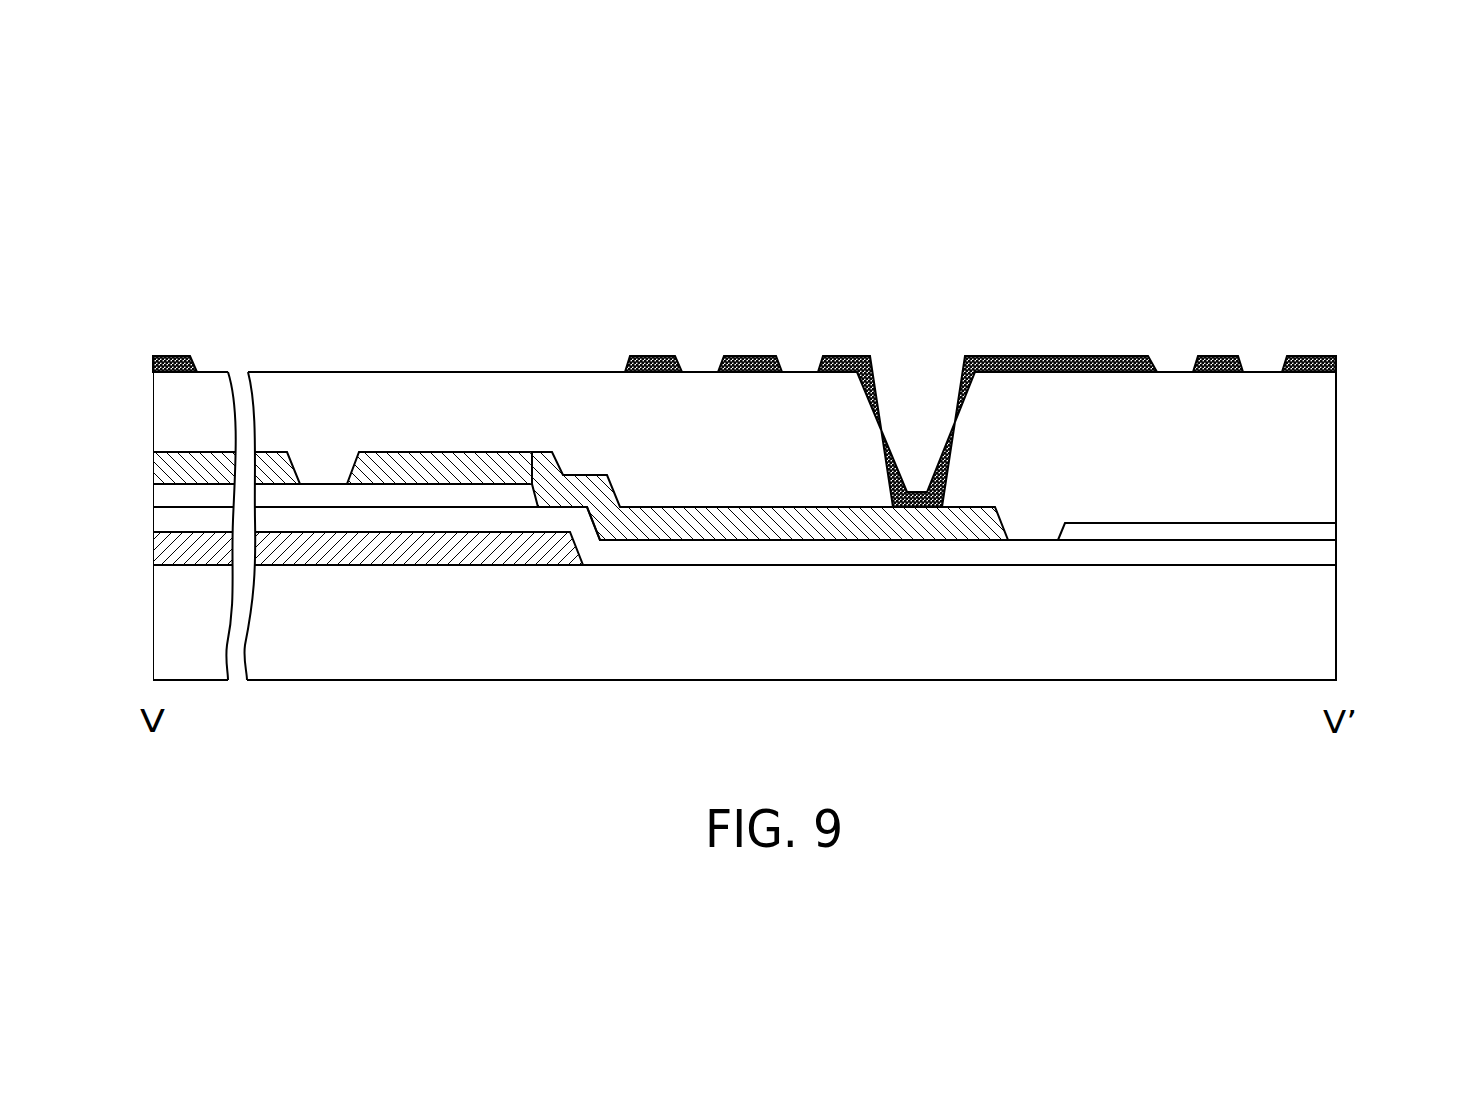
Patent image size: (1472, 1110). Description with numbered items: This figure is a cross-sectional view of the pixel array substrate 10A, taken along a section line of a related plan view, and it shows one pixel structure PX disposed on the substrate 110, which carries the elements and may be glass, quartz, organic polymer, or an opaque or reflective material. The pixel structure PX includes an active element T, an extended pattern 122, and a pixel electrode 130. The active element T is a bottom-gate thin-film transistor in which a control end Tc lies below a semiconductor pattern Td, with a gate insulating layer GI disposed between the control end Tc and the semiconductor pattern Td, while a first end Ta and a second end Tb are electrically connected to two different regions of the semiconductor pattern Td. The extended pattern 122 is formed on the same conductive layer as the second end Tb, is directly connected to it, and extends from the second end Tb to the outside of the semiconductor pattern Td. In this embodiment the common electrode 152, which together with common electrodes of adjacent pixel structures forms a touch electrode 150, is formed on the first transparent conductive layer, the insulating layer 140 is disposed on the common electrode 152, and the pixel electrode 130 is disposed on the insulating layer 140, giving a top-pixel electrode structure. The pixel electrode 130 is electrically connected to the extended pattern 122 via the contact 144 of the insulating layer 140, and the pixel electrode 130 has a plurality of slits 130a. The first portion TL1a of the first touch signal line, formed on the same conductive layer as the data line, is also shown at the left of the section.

The pixel array substrate 10A is at (785, 438).
The pixel structure PX is at (785, 380).
The active element T is at (744, 398).
The first end Ta is at (272, 463).
The second end Tb is at (417, 467).
The control end Tc is at (506, 548).
The semiconductor pattern Td is at (320, 495).
The gate insulating layer GI is at (375, 515).
The substrate 110 is at (165, 622).
The extended pattern 122 is at (635, 528).
The pixel electrode 130 is at (777, 394).
The slits 130a is at (1005, 394).
The insulating layer 140 is at (1310, 458).
The contact 144 is at (870, 417).
The touch electrode 150 is at (1264, 534).
The common electrode 152 is at (1310, 534).
The first portion of the first touch signal line TL1a is at (168, 355).